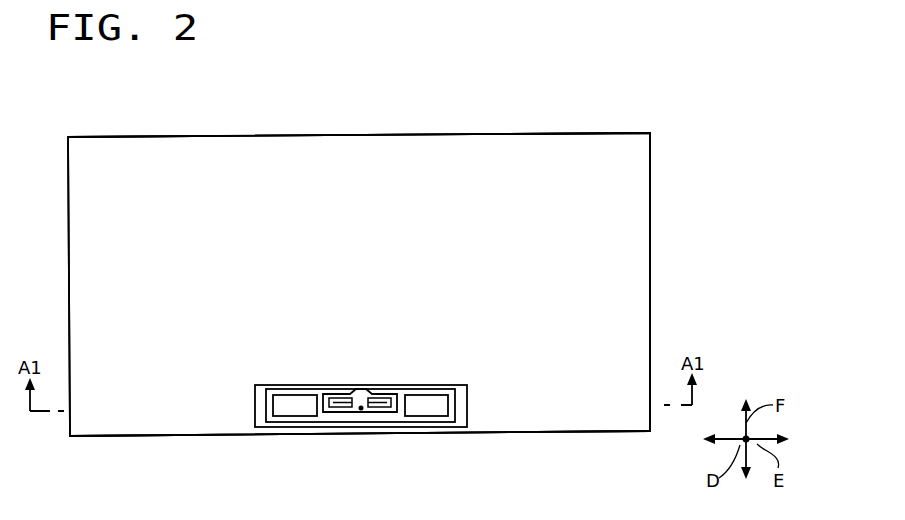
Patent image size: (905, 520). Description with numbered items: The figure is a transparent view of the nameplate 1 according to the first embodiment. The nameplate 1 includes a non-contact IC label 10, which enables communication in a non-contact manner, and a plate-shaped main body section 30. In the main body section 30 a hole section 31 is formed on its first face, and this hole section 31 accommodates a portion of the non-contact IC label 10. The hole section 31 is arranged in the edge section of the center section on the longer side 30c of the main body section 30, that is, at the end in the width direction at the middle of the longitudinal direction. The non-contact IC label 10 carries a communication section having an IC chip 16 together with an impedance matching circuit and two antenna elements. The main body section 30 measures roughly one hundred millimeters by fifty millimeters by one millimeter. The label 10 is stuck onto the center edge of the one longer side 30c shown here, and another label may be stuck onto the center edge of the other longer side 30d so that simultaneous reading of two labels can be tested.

The nameplate 1 is at (130, 130).
The main body section 30 is at (421, 148).
The other longer side 30d is at (257, 134).
The longer side 30c is at (170, 437).
The non-contact IC label 10 is at (365, 441).
The IC chip 16 is at (359, 422).
The hole section 31 is at (471, 425).